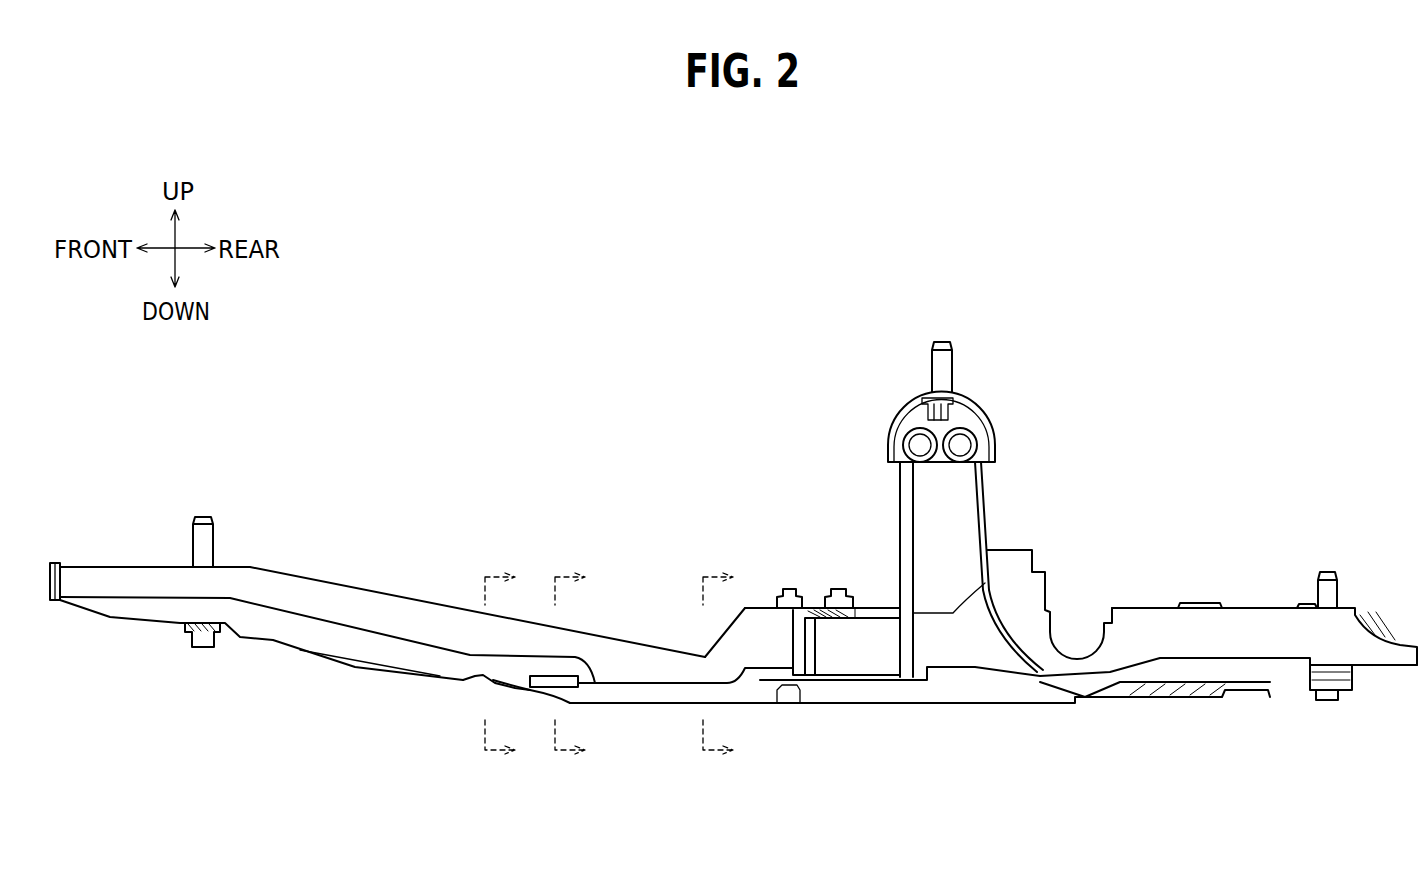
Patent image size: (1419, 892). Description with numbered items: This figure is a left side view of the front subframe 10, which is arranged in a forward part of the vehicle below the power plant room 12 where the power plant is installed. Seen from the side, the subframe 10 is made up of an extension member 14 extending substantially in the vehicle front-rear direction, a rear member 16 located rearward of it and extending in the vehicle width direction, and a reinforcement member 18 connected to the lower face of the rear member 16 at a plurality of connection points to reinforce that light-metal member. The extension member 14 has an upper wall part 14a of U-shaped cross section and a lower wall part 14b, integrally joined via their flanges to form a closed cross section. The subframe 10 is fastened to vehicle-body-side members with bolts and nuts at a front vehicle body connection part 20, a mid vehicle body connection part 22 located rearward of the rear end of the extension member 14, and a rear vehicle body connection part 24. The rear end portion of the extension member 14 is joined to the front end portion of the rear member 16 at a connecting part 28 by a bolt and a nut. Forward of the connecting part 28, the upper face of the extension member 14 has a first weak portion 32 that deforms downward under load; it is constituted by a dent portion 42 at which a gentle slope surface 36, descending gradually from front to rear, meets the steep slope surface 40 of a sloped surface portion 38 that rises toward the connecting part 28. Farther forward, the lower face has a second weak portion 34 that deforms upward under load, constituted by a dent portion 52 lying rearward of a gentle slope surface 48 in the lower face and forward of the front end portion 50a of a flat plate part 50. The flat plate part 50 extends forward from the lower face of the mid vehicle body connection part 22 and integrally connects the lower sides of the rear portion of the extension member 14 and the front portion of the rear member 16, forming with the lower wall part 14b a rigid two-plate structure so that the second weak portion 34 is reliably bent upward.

The front subframe 10 is at (1147, 412).
The power plant room 12 is at (607, 432).
The extension member 14 is at (442, 567).
The upper wall part 14a is at (290, 595).
The lower wall part 14b is at (283, 623).
The rear member 16 is at (1143, 585).
The reinforcement member 18 is at (1140, 720).
The front vehicle body connection part 20 is at (203, 647).
The mid vehicle body connection part 22 is at (942, 340).
The rear vehicle body connection part 24 is at (1333, 700).
The connecting part 28 is at (810, 583).
The first weak portion 32 is at (691, 629).
The second weak portion 34 is at (477, 697).
The gentle slope surface 36 is at (378, 592).
The sloped surface portion 38 is at (722, 621).
The steep slope surface 40 is at (740, 625).
The dent portion 42 is at (700, 647).
The gentle slope surface 48 is at (348, 667).
The flat plate part 50 is at (728, 693).
The front end portion 50a is at (535, 690).
The dent portion 52 is at (478, 687).